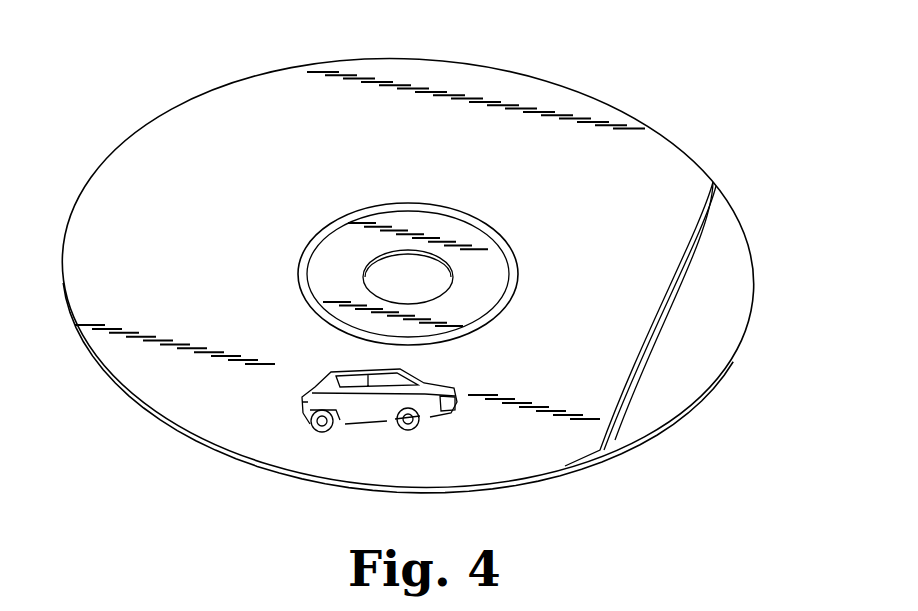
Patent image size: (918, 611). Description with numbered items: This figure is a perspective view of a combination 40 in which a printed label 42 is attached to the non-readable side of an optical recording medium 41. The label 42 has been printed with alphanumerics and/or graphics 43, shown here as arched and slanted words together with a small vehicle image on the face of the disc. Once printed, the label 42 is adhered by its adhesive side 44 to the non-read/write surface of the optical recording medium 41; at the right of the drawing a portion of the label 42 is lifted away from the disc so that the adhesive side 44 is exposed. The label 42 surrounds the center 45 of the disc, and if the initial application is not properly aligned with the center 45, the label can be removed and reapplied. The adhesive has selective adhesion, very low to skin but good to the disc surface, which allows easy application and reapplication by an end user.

The combination 40 is at (433, 288).
The optical recording medium 41 is at (718, 313).
The label 42 is at (648, 162).
The graphic image on label 43 is at (373, 397).
The adhesive side 44 is at (653, 328).
The center 45 is at (390, 252).